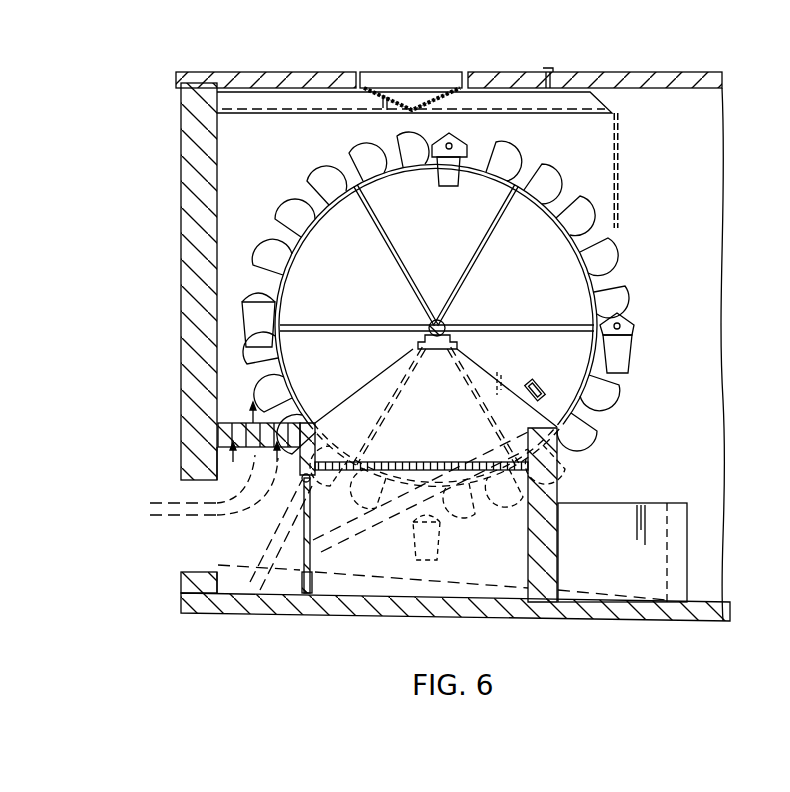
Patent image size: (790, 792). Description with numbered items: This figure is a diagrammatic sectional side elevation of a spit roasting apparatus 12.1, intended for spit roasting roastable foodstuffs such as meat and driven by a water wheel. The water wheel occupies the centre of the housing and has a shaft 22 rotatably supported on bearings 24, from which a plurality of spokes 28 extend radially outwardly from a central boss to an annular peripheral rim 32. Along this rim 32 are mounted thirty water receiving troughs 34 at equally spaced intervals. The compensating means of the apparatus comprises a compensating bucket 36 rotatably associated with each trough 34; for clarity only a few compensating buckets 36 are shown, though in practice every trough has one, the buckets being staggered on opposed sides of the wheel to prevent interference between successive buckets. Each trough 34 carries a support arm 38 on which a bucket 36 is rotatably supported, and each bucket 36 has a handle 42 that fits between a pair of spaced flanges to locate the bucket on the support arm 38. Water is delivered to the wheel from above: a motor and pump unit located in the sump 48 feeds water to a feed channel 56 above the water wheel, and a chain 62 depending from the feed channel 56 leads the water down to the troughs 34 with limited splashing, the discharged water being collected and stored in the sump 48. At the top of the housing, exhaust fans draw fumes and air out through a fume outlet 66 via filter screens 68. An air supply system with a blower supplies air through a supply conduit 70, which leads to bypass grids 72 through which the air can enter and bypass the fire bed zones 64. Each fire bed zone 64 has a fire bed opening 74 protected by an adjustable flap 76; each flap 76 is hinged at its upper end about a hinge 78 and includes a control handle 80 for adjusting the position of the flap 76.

The spit roasting apparatus 12.1 is at (140, 120).
The shaft 22 is at (446, 323).
The bearings 24 is at (459, 345).
The spokes 28 is at (406, 248).
The annular peripheral rim 32 is at (565, 262).
The water receiving troughs 34 is at (300, 190).
The compensating bucket 36 is at (627, 368).
The support arm 38 is at (628, 323).
The handle 42 is at (633, 343).
The sump 48 is at (646, 503).
The feed channel 56 is at (586, 113).
The chain 62 is at (620, 180).
The fire bed zones 64 is at (418, 458).
The fume outlet 66 is at (430, 72).
The filter screens 68 is at (375, 97).
The supply conduit 70 is at (192, 550).
The bypass grids 72 is at (218, 433).
The fire bed opening 74 is at (322, 550).
The adjustable flap 76 is at (272, 530).
The hinge 78 is at (312, 482).
The control handle 80 is at (543, 382).